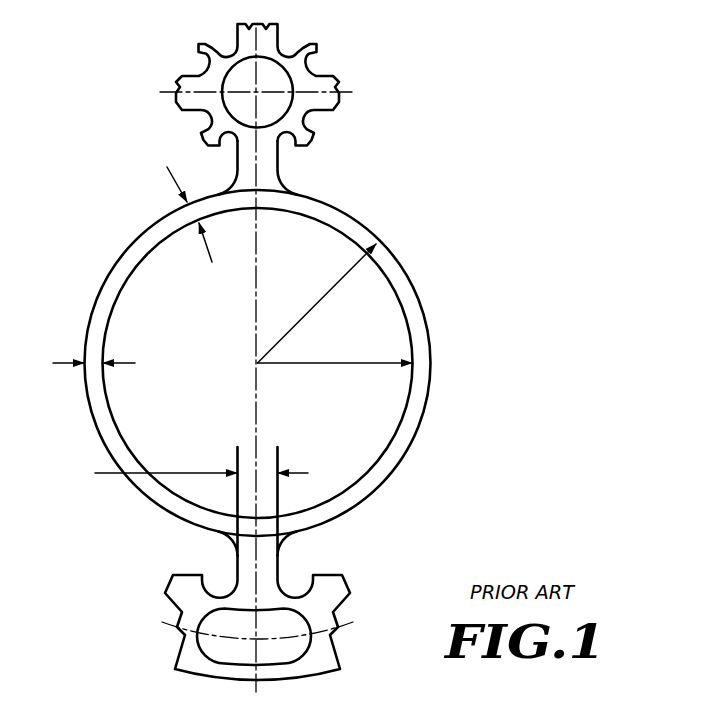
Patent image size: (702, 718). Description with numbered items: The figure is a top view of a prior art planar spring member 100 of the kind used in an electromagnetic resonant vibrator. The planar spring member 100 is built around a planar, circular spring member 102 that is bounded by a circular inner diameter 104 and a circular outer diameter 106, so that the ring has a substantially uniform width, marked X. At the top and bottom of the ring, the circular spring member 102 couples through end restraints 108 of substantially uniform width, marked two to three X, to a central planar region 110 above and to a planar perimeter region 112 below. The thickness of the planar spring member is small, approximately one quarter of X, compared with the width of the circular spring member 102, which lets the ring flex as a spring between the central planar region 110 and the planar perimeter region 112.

The planar spring member 100 is at (284, 349).
The circular spring member 102 is at (405, 270).
The circular inner diameter 104 is at (335, 377).
The circular outer diameter 106 is at (317, 303).
The end restraints 108 is at (282, 172).
The central planar region 110 is at (263, 82).
The planar perimeter region 112 is at (338, 619).